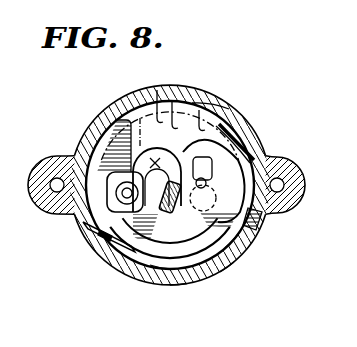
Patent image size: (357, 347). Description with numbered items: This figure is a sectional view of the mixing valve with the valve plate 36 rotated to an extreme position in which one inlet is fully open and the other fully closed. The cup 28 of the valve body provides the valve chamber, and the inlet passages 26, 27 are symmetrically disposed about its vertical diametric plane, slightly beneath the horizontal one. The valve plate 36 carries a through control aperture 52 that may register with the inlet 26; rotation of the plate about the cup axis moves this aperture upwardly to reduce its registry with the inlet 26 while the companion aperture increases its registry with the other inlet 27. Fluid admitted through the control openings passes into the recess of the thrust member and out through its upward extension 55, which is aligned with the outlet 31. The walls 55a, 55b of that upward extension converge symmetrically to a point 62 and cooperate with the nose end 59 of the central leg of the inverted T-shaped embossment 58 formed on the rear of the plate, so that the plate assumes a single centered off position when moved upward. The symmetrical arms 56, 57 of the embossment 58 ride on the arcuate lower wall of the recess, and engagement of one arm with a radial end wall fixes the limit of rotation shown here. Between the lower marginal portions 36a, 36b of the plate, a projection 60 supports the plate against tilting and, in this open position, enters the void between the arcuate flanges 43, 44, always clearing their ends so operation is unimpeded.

The inlet passage 26 is at (268, 157).
The inlet passage 27 is at (124, 208).
The cup 28 is at (92, 121).
The outlet 31 is at (199, 110).
The valve plate 36 is at (137, 253).
The lower marginal portion 36a is at (256, 224).
The lower marginal portion 36b is at (163, 264).
The arcuate flange 43 is at (245, 247).
The arcuate flange 44 is at (97, 232).
The control aperture 52 is at (247, 123).
The upward extension 55 is at (159, 86).
The wall of upper recess extension 55a is at (227, 105).
The wall of upper recess extension 55b is at (102, 108).
The arm 56 is at (302, 199).
The arm 57 is at (140, 249).
The inverted T-shaped embossment 58 is at (218, 268).
The nose end 59 is at (82, 150).
The projection 60 is at (185, 285).
The point 62 is at (172, 102).